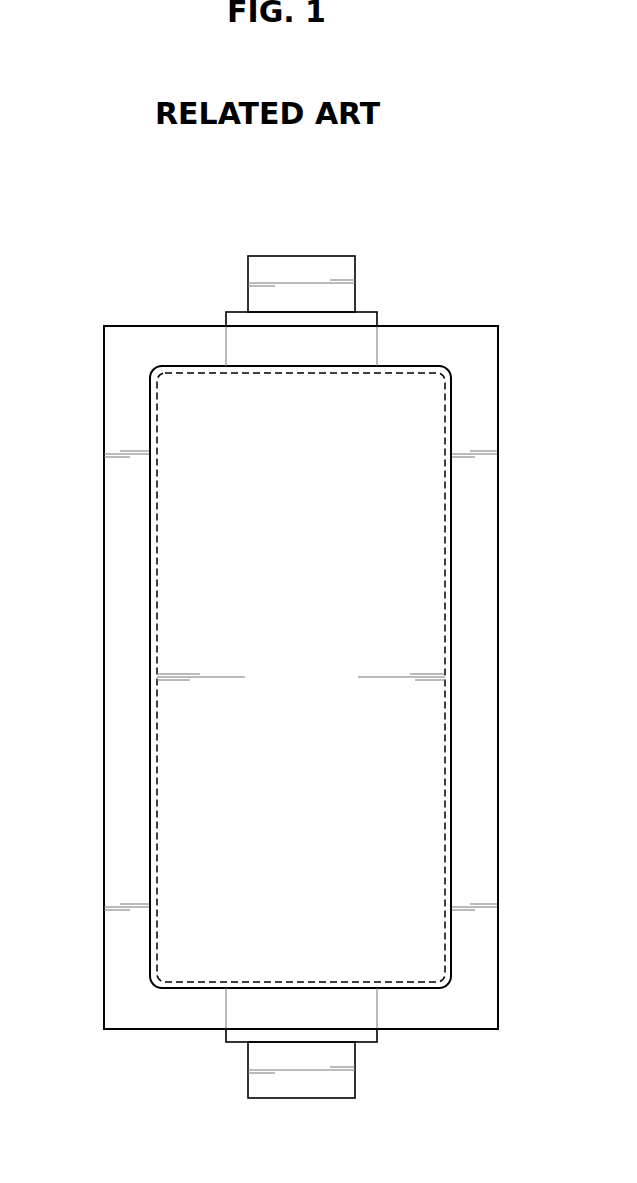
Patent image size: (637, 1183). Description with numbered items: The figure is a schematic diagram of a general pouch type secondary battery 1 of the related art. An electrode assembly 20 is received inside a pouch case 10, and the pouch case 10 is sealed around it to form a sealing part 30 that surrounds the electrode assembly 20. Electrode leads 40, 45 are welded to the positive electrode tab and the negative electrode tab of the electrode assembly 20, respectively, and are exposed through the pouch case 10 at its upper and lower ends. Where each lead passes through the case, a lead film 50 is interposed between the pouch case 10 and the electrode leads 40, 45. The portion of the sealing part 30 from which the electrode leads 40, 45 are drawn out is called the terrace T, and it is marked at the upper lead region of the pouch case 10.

The pouch type secondary battery 1 is at (268, 680).
The pouch case 10 is at (163, 325).
The electrode assembly 20 is at (170, 758).
The sealing part 30 is at (113, 696).
The electrode lead 40 is at (269, 262).
The electrode lead 45 is at (268, 1095).
The lead film 50 is at (237, 313).
The terrace T is at (378, 340).